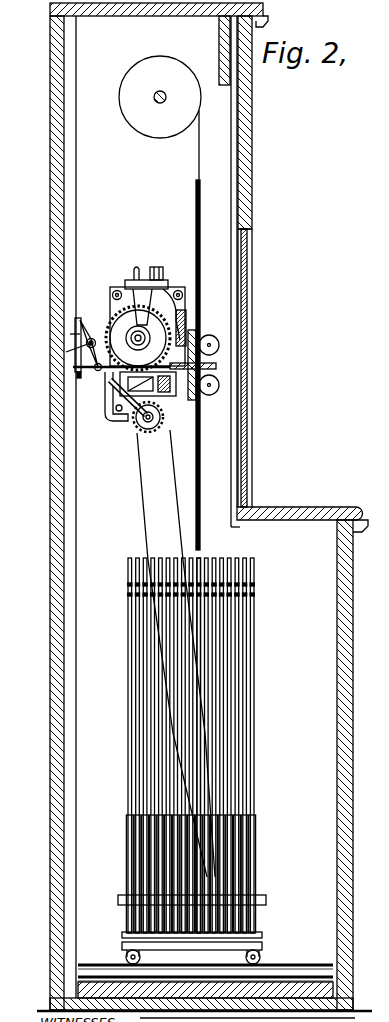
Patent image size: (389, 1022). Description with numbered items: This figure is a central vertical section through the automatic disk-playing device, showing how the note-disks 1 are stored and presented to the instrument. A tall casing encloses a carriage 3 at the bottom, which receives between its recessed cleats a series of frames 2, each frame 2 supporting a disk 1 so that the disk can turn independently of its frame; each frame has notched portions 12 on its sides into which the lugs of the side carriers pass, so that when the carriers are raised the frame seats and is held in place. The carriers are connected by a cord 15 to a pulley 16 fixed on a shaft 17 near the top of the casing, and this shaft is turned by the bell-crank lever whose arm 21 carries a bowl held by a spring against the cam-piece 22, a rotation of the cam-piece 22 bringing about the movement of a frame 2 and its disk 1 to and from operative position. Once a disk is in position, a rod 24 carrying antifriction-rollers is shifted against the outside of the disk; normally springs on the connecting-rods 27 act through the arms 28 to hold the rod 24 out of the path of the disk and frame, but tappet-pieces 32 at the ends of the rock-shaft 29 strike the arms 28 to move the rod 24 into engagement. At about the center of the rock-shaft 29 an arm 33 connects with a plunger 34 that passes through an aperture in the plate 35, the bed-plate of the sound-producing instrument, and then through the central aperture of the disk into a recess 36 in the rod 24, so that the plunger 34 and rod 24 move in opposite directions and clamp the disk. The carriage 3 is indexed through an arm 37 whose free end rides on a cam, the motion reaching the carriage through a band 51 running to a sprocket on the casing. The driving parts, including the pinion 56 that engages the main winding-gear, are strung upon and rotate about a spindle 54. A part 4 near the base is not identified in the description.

The note-disk 1 is at (200, 247).
The frame 2 is at (200, 545).
The carriage 3 is at (262, 935).
The rail 4 is at (297, 965).
The notched portion 12 is at (256, 590).
The cord 15 is at (200, 155).
The pulley 16 is at (160, 97).
The shaft 17 is at (153, 99).
The bell-crank lever arm 21 is at (173, 322).
The cam-piece 22 is at (123, 316).
The rod 24 is at (212, 366).
The connecting-rod 27 is at (80, 378).
The arm 28 is at (76, 334).
The rock-shaft 29 is at (66, 352).
The tappet-piece 32 is at (86, 323).
The arm 33 is at (95, 368).
The plunger 34 is at (196, 340).
The plate 35 is at (197, 405).
The recess 36 is at (216, 370).
The arm 37 is at (118, 427).
The band 51 is at (143, 490).
The spindle 54 is at (134, 339).
The pinion 56 is at (183, 296).